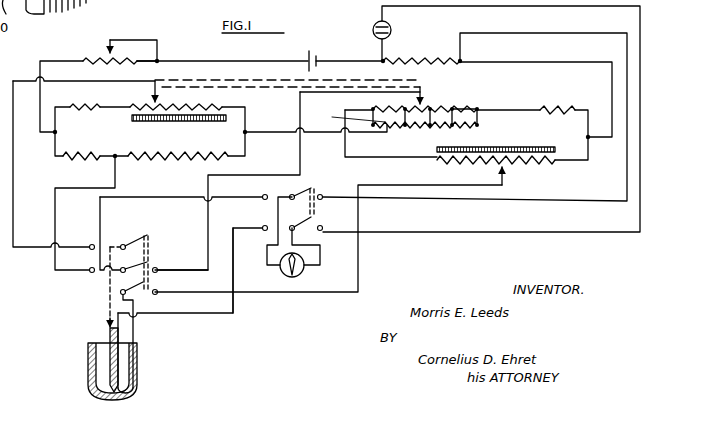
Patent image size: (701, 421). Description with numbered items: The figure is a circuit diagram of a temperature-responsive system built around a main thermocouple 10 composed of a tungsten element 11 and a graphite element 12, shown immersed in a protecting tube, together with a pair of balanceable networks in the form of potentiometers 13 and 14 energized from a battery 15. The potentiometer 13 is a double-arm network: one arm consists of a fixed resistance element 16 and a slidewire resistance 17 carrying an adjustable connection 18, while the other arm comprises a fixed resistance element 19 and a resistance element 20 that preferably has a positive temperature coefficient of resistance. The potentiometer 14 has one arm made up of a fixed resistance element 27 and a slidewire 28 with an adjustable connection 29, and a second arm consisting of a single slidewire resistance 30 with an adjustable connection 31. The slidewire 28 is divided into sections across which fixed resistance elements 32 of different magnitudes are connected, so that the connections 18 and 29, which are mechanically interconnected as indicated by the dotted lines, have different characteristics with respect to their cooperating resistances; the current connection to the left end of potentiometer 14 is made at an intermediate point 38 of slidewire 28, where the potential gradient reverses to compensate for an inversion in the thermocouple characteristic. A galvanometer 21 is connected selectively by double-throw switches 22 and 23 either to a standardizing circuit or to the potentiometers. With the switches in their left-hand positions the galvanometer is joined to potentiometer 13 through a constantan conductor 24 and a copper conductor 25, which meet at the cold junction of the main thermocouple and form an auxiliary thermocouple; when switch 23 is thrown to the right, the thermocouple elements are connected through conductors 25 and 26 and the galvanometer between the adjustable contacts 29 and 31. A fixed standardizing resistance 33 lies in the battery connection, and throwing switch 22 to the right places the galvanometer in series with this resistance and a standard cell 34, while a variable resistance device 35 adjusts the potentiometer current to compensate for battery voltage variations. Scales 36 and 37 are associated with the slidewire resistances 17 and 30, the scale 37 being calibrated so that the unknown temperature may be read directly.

The main thermocouple 10 is at (122, 358).
The tungsten element 11 is at (117, 386).
The graphite element 12 is at (88, 356).
The potentiometer 13 is at (128, 144).
The potentiometer 14 is at (509, 140).
The battery 15 is at (316, 55).
The fixed resistance element 16 is at (95, 112).
The slidewire resistance 17 is at (218, 106).
The adjustable connection 18 is at (160, 100).
The fixed resistance element 19 is at (187, 162).
The resistance element 20 is at (80, 160).
The galvanometer 21 is at (306, 273).
The double-throw switch 22 is at (314, 190).
The double-throw switch 23 is at (149, 237).
The conductor 24 is at (107, 288).
The copper conductor 25 is at (235, 311).
The conductor 26 is at (136, 330).
The fixed resistance element 27 is at (549, 107).
The slidewire 28 is at (466, 107).
The adjustable connection 29 is at (424, 105).
The slidewire resistance 30 is at (526, 164).
The adjustable connection 31 is at (499, 172).
The fixed resistance elements 32 is at (465, 127).
The fixed standardizing resistance 33 is at (416, 58).
The standard cell 34 is at (392, 30).
The variable resistance device 35 is at (107, 47).
The scale 36 is at (186, 122).
The scale 37 is at (532, 147).
The intermediate point 38 is at (346, 117).